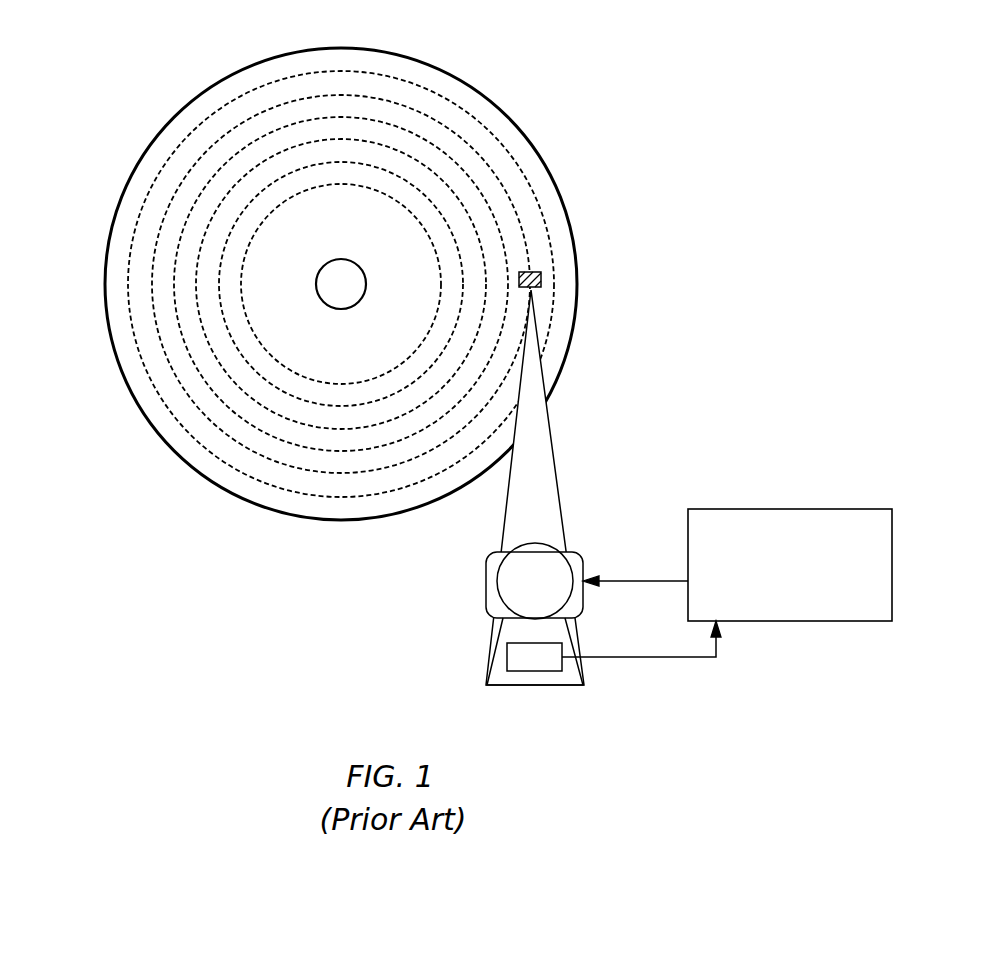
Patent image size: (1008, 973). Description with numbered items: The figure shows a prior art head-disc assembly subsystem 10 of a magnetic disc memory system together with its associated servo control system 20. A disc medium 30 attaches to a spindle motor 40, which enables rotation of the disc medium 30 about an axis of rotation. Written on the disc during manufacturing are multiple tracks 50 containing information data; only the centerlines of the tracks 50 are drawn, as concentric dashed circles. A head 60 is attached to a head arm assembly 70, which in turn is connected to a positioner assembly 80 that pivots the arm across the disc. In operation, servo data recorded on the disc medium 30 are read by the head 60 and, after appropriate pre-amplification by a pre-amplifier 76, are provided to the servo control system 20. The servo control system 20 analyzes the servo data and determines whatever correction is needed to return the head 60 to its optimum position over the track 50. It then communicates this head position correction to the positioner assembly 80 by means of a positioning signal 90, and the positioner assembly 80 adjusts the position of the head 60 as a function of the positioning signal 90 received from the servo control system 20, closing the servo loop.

The head-disc assembly subsystem 10 is at (79, 537).
The servo control system 20 is at (812, 510).
The disc medium 30 is at (545, 168).
The spindle motor 40 is at (352, 278).
The tracks 50 is at (252, 297).
The head 60 is at (541, 275).
The head arm assembly 70 is at (545, 435).
The pre-amplifier 76 is at (507, 647).
The positioner assembly 80 is at (485, 587).
The positioning signal 90 is at (608, 581).